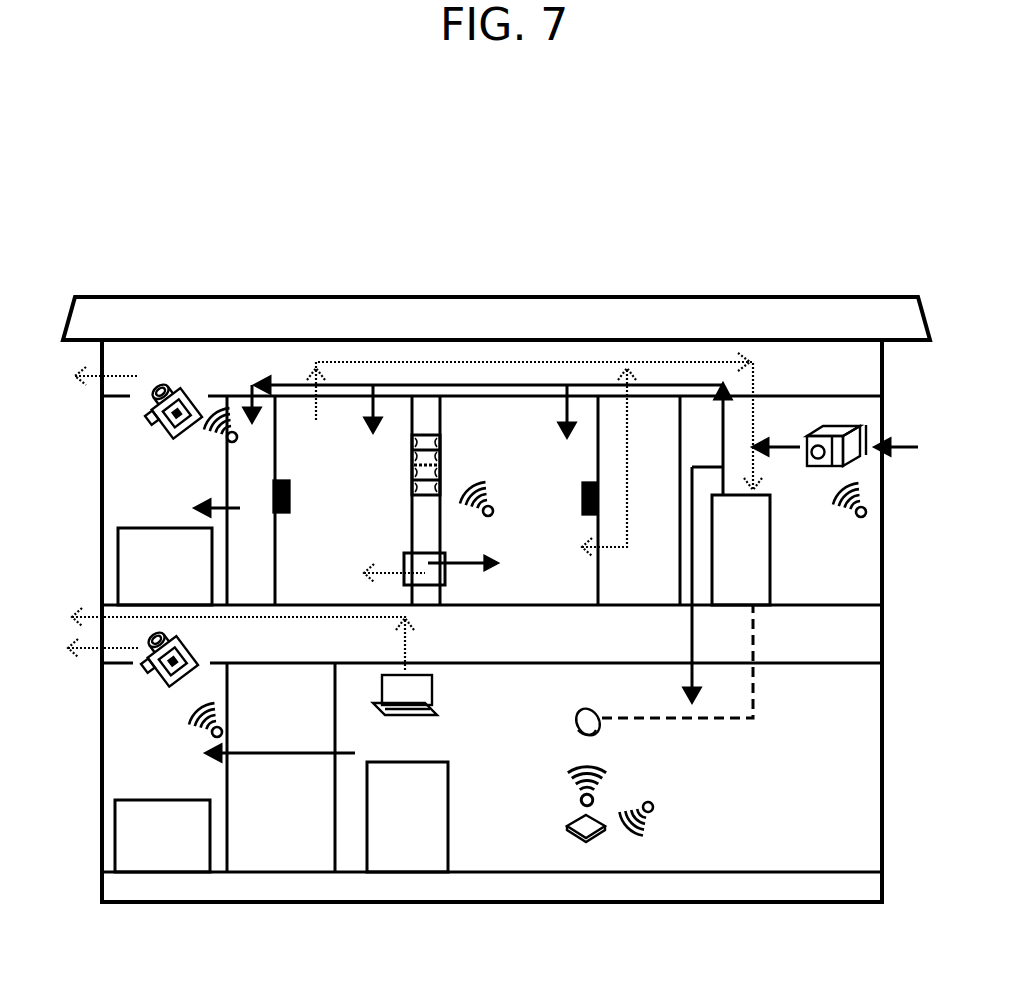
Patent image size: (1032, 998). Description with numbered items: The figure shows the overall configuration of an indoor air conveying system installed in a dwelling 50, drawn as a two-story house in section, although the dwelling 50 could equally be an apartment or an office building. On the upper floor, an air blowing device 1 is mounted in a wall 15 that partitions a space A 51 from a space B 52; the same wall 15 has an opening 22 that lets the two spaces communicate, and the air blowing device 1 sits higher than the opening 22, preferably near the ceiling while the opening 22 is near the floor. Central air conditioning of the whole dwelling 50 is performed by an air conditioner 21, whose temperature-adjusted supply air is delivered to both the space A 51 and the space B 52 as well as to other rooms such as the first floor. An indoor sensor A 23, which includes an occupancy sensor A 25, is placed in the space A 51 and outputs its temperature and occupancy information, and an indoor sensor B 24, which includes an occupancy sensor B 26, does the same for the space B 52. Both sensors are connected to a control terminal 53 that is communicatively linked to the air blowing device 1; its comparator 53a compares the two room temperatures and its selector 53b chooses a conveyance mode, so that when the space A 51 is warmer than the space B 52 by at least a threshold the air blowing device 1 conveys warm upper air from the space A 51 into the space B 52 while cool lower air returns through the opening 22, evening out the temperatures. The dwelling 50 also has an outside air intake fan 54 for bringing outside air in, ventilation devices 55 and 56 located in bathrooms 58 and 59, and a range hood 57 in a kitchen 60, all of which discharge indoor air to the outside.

The air blowing device 1 is at (443, 407).
The wall 15 is at (421, 416).
The air conditioner 21 is at (747, 543).
The opening 22 is at (410, 563).
The indoor sensor A 23 is at (628, 367).
The indoor sensor B 24 is at (294, 366).
The occupancy sensor A 25 is at (593, 483).
The occupancy sensor B 26 is at (288, 480).
The dwelling 50 is at (525, 180).
The space A 51 is at (509, 470).
The space B 52 is at (340, 443).
The control terminal 53 is at (678, 843).
The comparator 53a is at (678, 843).
The selector 53b is at (598, 840).
The outside air intake fan 54 is at (849, 427).
The ventilation device 55 is at (188, 378).
The ventilation device 56 is at (153, 676).
The range hood 57 is at (390, 718).
The bathroom 58 is at (142, 563).
The bathroom 59 is at (162, 835).
The kitchen 60 is at (410, 830).